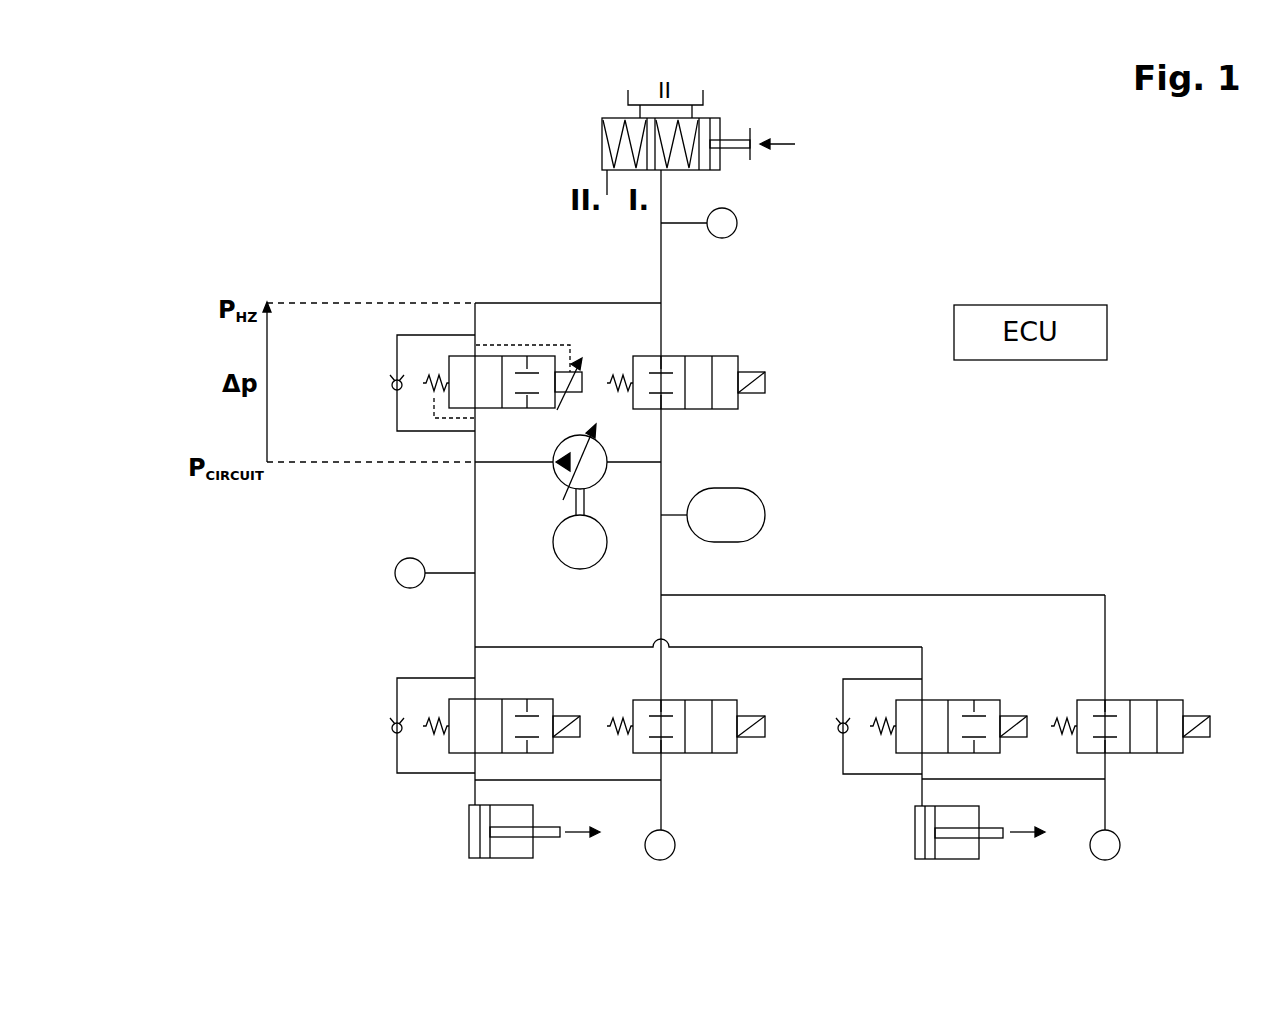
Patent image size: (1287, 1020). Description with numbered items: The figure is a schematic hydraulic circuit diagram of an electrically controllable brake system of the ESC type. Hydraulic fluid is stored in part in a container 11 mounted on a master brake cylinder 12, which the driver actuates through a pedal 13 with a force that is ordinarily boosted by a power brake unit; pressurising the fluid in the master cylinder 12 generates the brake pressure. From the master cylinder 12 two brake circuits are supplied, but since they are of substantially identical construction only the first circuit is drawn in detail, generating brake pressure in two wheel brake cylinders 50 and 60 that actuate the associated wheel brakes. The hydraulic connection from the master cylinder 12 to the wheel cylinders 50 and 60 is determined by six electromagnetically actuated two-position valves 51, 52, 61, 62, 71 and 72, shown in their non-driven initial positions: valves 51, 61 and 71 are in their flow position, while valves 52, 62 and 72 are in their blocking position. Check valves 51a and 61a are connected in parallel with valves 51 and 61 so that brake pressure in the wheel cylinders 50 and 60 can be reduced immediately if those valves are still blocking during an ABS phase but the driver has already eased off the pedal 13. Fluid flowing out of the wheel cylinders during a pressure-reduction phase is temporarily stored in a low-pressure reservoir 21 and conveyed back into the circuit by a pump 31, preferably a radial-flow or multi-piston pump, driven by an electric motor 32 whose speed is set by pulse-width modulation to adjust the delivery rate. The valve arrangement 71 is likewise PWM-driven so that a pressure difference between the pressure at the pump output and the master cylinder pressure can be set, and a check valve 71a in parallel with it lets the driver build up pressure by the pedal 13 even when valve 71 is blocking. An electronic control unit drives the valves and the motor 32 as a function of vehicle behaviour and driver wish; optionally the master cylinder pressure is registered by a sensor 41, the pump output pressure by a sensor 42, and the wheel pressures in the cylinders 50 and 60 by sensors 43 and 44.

The container 11 is at (689, 98).
The master brake cylinder 12 is at (601, 117).
The pedal 13 is at (742, 152).
The low-pressure reservoir 21 is at (742, 500).
The pump 31 is at (568, 456).
The electric motor 32 is at (568, 538).
The sensor 41 is at (732, 232).
The sensor 42 is at (400, 584).
The sensor 43 is at (650, 855).
The sensor 44 is at (1095, 857).
The wheel brake cylinder 50 is at (475, 845).
The 2/2-way valve 51 is at (548, 702).
The check valve 51a is at (396, 734).
The 2/2-way valve 52 is at (738, 702).
The wheel brake cylinder 60 is at (918, 845).
The 2/2-way valve 61 is at (998, 702).
The check valve 61a is at (842, 735).
The 2/2-way valve 62 is at (1178, 702).
The valve arrangement 71 is at (552, 362).
The check valve 71a is at (396, 392).
The 2/2-way valve 72 is at (730, 362).